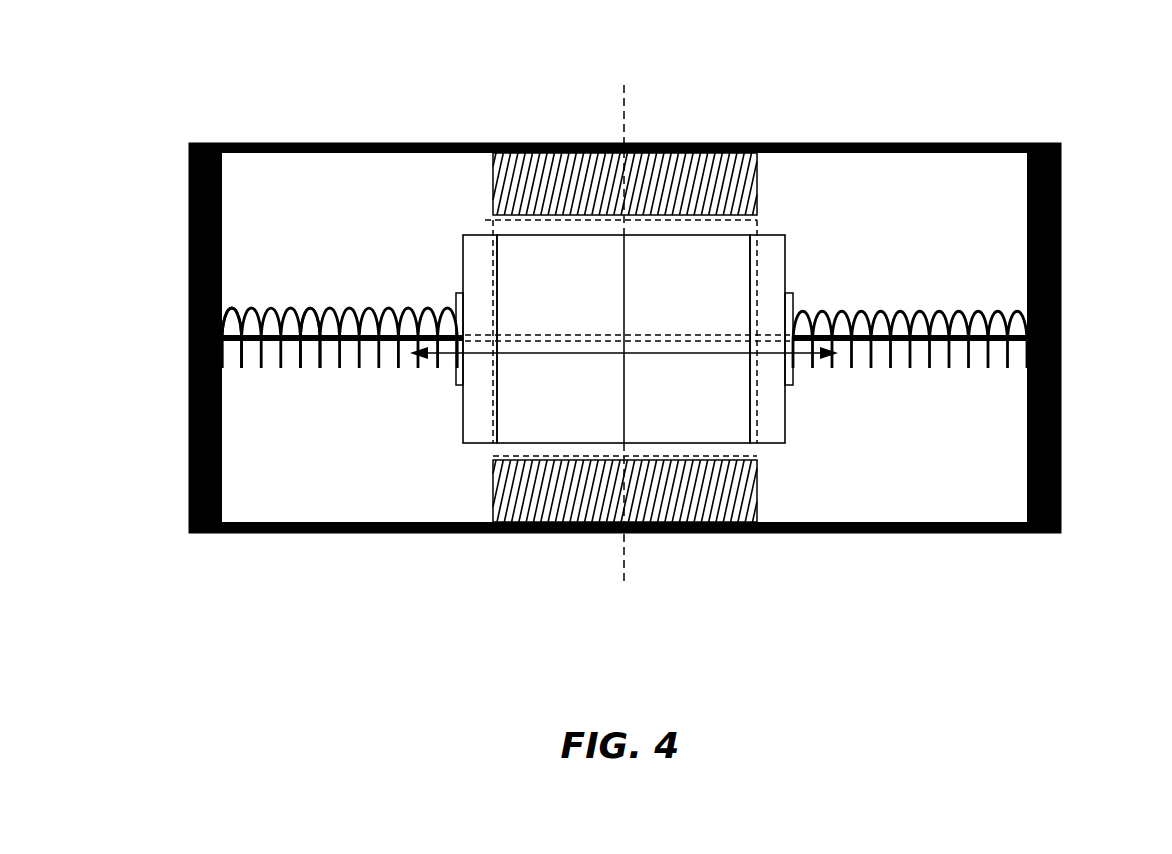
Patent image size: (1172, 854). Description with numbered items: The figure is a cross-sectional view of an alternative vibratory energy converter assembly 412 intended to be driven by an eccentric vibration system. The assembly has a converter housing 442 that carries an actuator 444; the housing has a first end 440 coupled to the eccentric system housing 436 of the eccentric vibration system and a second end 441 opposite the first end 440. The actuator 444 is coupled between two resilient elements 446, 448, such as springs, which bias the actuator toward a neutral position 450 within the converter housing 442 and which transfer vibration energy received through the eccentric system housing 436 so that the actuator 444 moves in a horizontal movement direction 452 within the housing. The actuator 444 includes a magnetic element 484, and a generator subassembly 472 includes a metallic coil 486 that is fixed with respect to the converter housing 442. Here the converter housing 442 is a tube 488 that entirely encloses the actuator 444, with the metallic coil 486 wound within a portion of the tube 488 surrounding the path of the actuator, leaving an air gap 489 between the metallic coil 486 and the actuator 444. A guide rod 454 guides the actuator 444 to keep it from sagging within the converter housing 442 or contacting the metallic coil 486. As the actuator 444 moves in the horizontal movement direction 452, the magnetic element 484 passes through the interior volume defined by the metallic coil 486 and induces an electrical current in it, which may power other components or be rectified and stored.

The vibratory energy converter assembly 412 is at (210, 96).
The eccentric system housing 436 is at (1060, 265).
The first end 440 is at (1060, 500).
The second end 441 is at (190, 458).
The converter housing 442 is at (340, 143).
The actuator 444 is at (475, 247).
The resilient element 446 is at (882, 358).
The resilient element 448 is at (362, 357).
The neutral position 450 is at (624, 115).
The horizontal movement direction 452 is at (476, 375).
The guide rod 454 is at (303, 368).
The generator subassembly 472 is at (758, 192).
The magnetic element 484 is at (720, 280).
The metallic coil 486 is at (688, 150).
The tube 488 is at (905, 143).
The air gap 489 is at (563, 228).